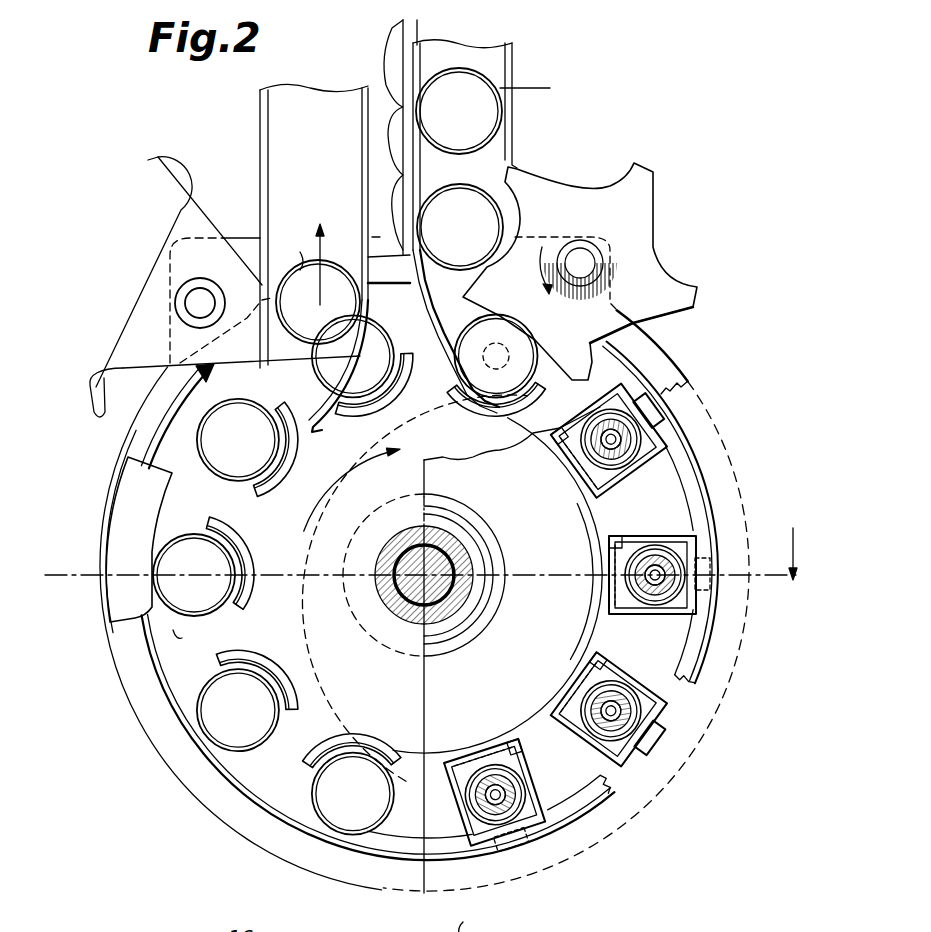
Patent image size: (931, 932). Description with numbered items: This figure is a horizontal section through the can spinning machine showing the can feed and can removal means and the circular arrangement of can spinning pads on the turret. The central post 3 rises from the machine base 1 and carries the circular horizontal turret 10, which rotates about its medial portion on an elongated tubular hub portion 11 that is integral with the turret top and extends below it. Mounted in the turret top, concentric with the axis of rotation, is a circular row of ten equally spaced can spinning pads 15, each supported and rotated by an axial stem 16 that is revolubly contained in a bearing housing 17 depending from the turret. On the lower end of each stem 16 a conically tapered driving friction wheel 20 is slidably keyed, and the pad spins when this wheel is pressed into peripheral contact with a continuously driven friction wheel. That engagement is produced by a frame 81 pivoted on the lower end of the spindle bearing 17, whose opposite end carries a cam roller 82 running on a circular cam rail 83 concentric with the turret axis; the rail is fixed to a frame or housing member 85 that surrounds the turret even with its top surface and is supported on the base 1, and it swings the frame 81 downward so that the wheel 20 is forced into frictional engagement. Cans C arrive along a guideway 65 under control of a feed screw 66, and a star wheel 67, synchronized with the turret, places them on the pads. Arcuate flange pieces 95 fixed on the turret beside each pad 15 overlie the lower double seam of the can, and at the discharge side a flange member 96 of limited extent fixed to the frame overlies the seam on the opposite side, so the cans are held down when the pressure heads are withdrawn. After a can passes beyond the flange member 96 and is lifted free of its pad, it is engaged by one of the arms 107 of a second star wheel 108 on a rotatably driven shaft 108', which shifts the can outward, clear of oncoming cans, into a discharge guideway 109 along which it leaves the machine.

The base 1 is at (425, 558).
The post 3 is at (395, 606).
The turret 10 is at (260, 773).
The hub portion 11 is at (410, 625).
The can spinning pad 15 is at (392, 384).
The stem 16 is at (487, 797).
The bearing housing 17 is at (673, 567).
The driving friction wheel 20 is at (643, 468).
The guideway 65 is at (488, 62).
The feed screw 66 is at (398, 105).
The star wheel 67 is at (643, 233).
The frame 81 is at (632, 750).
The cam roller 82 is at (670, 722).
The cam rail 83 is at (683, 457).
The frame or housing member 85 is at (127, 662).
The arcuate flange piece 95 is at (240, 566).
The flange member 96 is at (145, 560).
The arm 107 is at (131, 400).
The star wheel 108 is at (221, 272).
The shaft 108' is at (155, 297).
The discharge guideway 109 is at (275, 117).